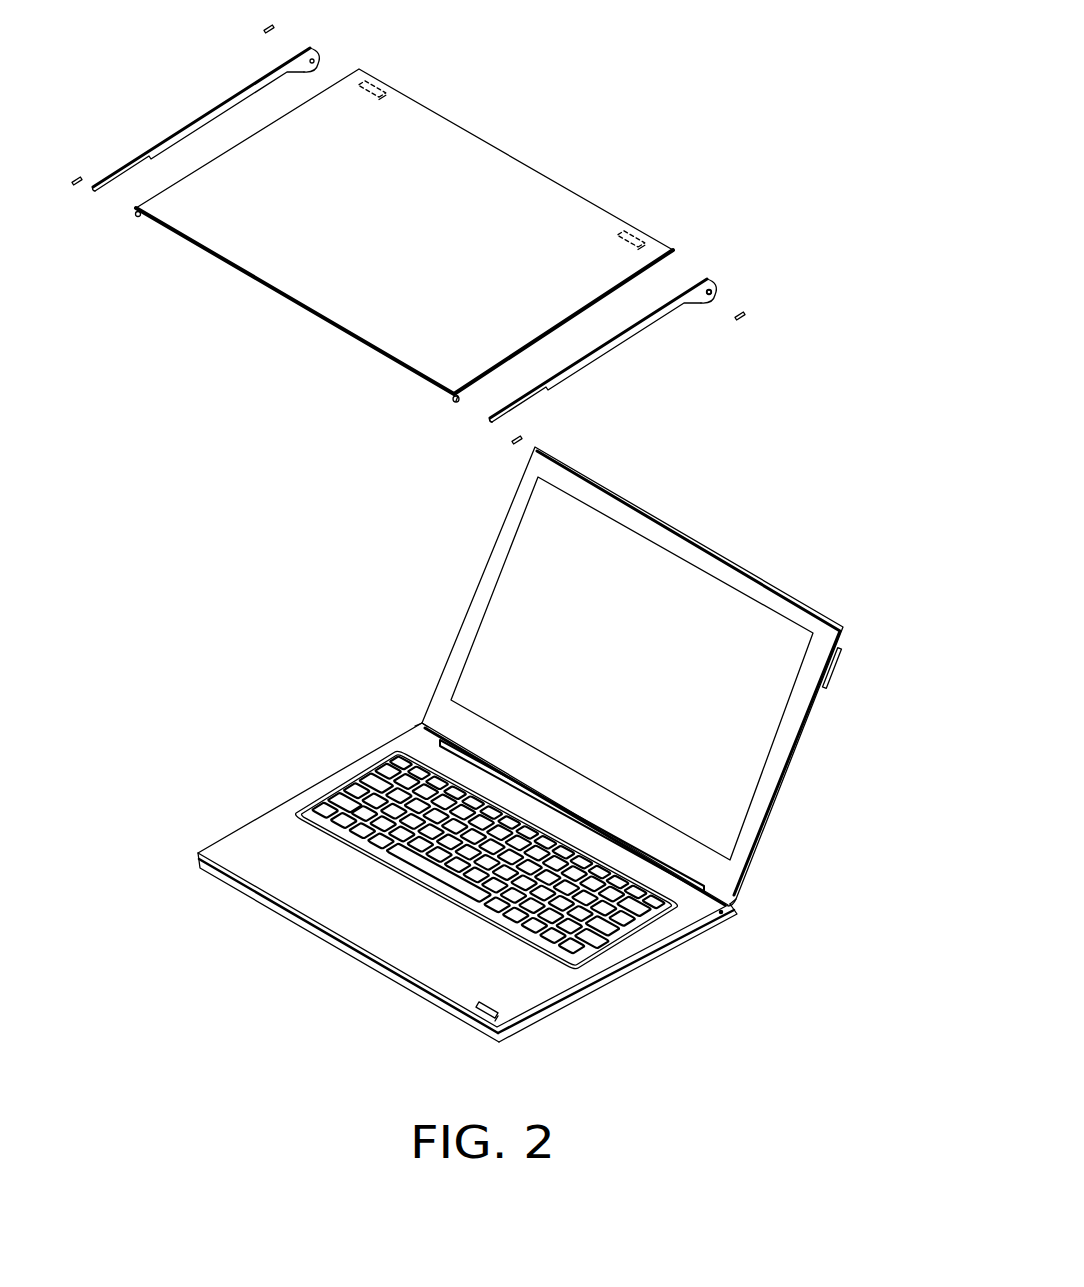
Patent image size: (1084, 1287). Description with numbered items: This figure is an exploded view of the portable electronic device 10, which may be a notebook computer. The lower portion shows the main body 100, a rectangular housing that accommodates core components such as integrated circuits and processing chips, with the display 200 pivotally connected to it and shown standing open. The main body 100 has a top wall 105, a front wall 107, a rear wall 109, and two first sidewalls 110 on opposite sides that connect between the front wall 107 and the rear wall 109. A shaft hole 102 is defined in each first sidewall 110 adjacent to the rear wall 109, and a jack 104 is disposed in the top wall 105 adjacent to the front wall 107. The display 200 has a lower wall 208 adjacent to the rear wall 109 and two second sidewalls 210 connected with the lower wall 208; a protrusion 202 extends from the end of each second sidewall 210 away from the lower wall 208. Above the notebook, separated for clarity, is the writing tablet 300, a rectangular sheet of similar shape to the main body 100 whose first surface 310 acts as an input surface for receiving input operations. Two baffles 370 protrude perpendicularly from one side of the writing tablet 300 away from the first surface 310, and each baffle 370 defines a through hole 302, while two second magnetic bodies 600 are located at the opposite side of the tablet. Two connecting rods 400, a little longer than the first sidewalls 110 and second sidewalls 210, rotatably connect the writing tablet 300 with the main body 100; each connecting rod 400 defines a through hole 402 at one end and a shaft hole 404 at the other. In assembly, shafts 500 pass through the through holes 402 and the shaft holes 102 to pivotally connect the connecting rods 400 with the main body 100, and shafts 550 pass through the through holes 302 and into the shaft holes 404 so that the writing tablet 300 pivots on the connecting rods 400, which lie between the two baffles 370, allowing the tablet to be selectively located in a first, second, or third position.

The portable electronic device 10 is at (583, 75).
The main body 100 is at (459, 875).
The shaft hole 102 is at (722, 914).
The jack 104 is at (477, 1018).
The top wall 105 is at (268, 840).
The front wall 107 is at (300, 920).
The rear wall 109 is at (421, 722).
The first sidewall 110 is at (648, 950).
The display 200 is at (657, 686).
The protrusion 202 is at (836, 672).
The lower wall 208 is at (732, 908).
The second sidewall 210 is at (767, 823).
The writing tablet 300 is at (435, 255).
The through hole 302 is at (455, 401).
The first surface 310 is at (213, 228).
The baffle 370 is at (452, 396).
The connecting rod 400 is at (611, 369).
The through hole 402 is at (720, 292).
The shaft hole 404 is at (490, 425).
The shaft 500 is at (748, 320).
The shaft 550 is at (522, 440).
The second magnetic body 600 is at (634, 231).